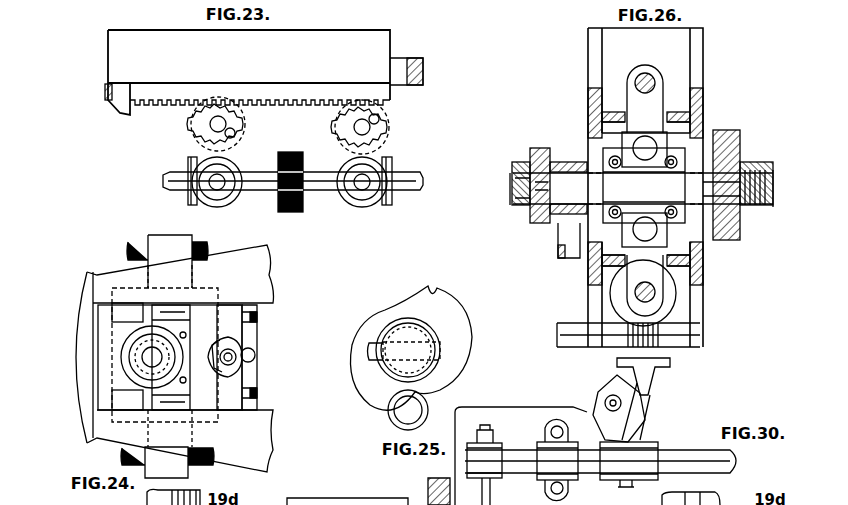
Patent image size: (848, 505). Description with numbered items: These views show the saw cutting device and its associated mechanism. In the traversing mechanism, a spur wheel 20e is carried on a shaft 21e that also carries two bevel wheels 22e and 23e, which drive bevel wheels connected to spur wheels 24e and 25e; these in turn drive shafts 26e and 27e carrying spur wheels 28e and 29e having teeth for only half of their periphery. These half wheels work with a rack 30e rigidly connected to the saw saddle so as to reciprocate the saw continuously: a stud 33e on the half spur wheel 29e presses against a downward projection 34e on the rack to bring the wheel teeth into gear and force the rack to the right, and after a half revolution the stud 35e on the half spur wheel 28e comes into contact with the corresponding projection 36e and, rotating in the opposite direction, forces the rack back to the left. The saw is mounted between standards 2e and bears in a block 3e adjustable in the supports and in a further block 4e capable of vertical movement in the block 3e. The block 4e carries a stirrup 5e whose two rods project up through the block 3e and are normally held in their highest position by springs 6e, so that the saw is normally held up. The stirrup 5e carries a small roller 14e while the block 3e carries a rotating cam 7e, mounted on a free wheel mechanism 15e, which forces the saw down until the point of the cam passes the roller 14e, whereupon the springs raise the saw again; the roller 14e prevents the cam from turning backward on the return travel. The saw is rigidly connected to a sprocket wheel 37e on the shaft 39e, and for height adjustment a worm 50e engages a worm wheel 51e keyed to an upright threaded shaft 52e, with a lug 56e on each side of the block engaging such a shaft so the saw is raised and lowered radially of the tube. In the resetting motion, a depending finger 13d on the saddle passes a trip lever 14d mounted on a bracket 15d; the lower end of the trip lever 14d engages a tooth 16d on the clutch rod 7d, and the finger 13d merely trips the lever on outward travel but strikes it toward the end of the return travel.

In FIG. 23, the projection 36e is at (108, 86).
In FIG. 23, the downward projection 34e is at (378, 98).
In FIG. 23, the rack 30e is at (320, 98).
In FIG. 23, the stud 35e is at (232, 130).
In FIG. 23, the shaft 26e is at (214, 118).
In FIG. 23, the half spur wheel 28e is at (222, 121).
In FIG. 23, the shaft 27e is at (372, 127).
In FIG. 23, the half spur wheel 29e is at (378, 118).
In FIG. 23, the stud 33e is at (342, 122).
In FIG. 23, the shaft 21e is at (405, 192).
In FIG. 23, the bevel wheel 22e is at (188, 162).
In FIG. 23, the spur wheel 24e is at (217, 164).
In FIG. 23, the spur wheel 20e is at (282, 202).
In FIG. 23, the spur wheel 25e is at (363, 206).
In FIG. 23, the bevel wheel 23e is at (392, 162).
In FIG. 26, the standards 2e is at (697, 70).
In FIG. 24, the standards 2e is at (175, 356).
In FIG. 26, the lug 56e is at (647, 74).
In FIG. 26, the block 3e is at (673, 133).
In FIG. 24, the block 3e is at (120, 315).
In FIG. 26, the block 4e is at (657, 237).
In FIG. 24, the block 4e is at (167, 325).
In FIG. 26, the shaft 39e is at (570, 187).
In FIG. 26, the sprocket wheel 37e is at (537, 227).
In FIG. 26, the upright threaded shaft 52e is at (633, 290).
In FIG. 26, the worm wheel 51e is at (673, 300).
In FIG. 26, the worm 50e is at (683, 347).
In FIG. 24, the springs 6e is at (182, 307).
In FIG. 24, the stirrup 5e is at (248, 338).
In FIG. 24, the rotating cam 7e is at (240, 368).
In FIG. 25, the rotating cam 7e is at (437, 300).
In FIG. 24, the small roller 14e is at (253, 354).
In FIG. 25, the small roller 14e is at (425, 398).
In FIG. 25, the free wheel mechanism 15e is at (437, 355).
In FIG. 30, the clutch rod 7d is at (600, 461).
In FIG. 30, the tooth 16d is at (590, 504).
In FIG. 30, the bracket 15d is at (583, 412).
In FIG. 30, the trip lever 14d is at (610, 420).
In FIG. 30, the depending finger 13d is at (647, 381).